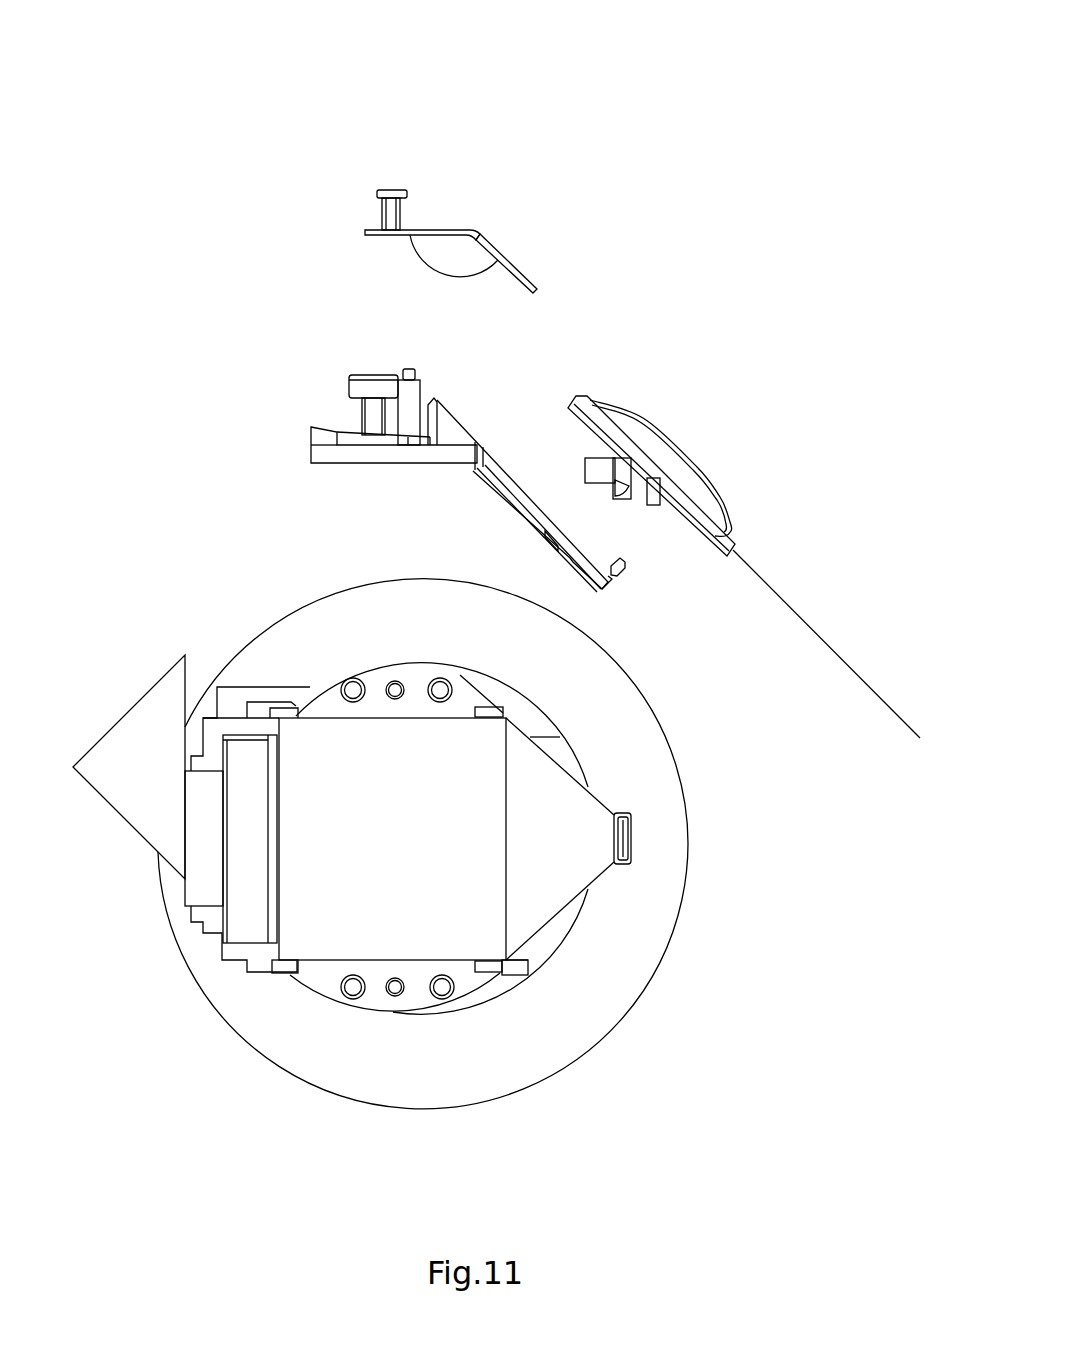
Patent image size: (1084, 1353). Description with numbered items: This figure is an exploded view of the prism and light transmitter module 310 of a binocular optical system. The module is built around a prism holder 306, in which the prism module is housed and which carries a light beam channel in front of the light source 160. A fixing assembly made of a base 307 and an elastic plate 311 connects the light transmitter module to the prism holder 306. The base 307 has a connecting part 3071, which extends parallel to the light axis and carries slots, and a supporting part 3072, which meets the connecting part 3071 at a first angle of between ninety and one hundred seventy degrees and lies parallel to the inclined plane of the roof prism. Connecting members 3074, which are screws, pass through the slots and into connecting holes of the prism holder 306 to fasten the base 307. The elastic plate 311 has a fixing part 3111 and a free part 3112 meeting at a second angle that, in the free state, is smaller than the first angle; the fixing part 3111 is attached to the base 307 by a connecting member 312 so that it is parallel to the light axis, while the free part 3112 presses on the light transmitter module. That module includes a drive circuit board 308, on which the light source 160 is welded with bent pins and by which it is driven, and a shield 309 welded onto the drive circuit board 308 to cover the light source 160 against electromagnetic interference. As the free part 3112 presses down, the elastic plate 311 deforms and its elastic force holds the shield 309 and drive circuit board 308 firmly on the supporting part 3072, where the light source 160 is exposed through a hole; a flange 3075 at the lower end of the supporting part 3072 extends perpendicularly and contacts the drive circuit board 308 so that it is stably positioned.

The prism and light transmitter module 310 is at (120, 43).
The prism holder 306 is at (217, 950).
The base 307 is at (440, 412).
The connecting part 3071 is at (320, 455).
The supporting part 3072 is at (532, 500).
The connecting member 3074 is at (363, 387).
The flange 3075 is at (625, 570).
The drive circuit board 308 is at (735, 542).
The shield 309 is at (655, 423).
The light source 160 is at (655, 498).
The elastic plate 311 is at (472, 229).
The fixing part 3111 is at (433, 231).
The free part 3112 is at (518, 274).
The connecting member 312 is at (382, 190).